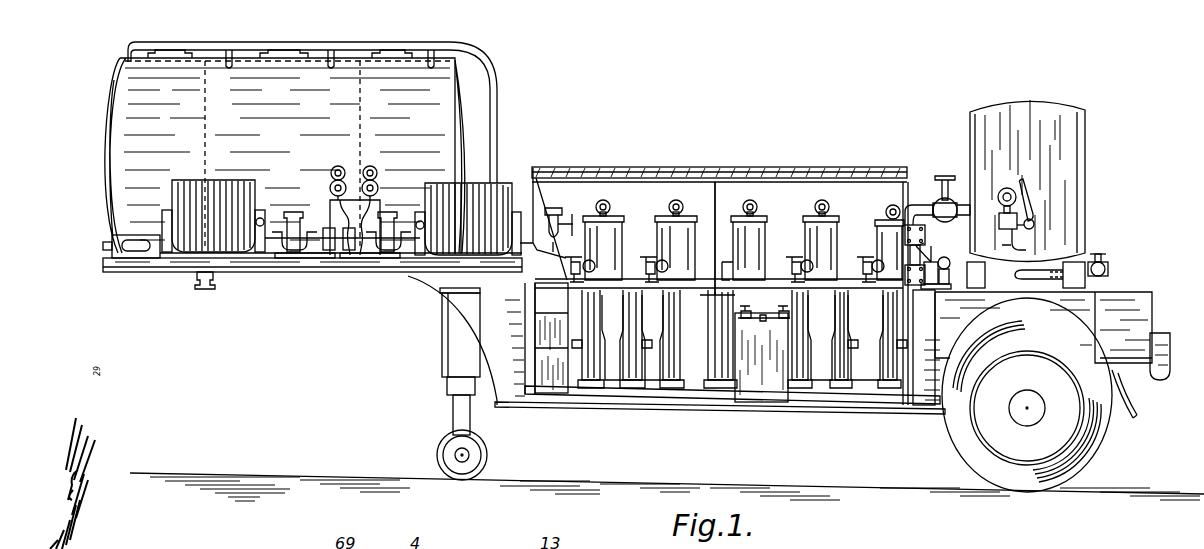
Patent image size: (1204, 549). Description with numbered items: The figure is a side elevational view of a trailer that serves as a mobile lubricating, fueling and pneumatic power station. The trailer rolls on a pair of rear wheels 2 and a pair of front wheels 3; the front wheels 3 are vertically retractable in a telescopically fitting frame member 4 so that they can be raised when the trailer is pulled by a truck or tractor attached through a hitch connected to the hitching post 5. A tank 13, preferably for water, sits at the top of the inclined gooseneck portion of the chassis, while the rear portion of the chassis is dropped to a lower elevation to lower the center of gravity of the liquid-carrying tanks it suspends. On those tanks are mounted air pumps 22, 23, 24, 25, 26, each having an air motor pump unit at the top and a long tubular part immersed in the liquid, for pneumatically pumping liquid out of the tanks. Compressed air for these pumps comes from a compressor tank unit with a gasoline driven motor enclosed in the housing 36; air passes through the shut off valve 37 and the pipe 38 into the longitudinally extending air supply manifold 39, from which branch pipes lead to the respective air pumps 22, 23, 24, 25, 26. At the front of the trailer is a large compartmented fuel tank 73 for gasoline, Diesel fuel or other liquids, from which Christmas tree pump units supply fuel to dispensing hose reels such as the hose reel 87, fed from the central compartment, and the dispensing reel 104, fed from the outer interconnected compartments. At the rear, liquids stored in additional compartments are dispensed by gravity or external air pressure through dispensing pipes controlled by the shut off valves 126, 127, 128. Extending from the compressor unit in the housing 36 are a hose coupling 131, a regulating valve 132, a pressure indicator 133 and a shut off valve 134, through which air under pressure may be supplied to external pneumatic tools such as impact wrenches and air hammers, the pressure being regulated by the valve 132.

The rear wheels 2 is at (1105, 437).
The front wheels 3 is at (488, 455).
The telescopically fitting frame member 4 is at (445, 355).
The hitching post 5 is at (206, 291).
The tank 13 is at (495, 404).
The air pump 22 is at (606, 218).
The air pump 23 is at (677, 218).
The air pump 24 is at (747, 218).
The air pump 25 is at (823, 218).
The air pump 26 is at (890, 210).
The housing 36 is at (1085, 138).
The shut off valve 37 is at (937, 258).
The pipe 38 is at (930, 203).
The air supply manifold 39 is at (775, 287).
The fuel tank 73 is at (463, 107).
The hose reel 87 is at (190, 247).
The dispensing reel 104 is at (448, 255).
The shut off valve 126 is at (755, 303).
The shut off valve 127 is at (763, 320).
The shut off valve 128 is at (781, 305).
The hose coupling 131 is at (1000, 245).
The regulating valve 132 is at (994, 208).
The pressure indicator 133 is at (1003, 191).
The shut off valve 134 is at (1030, 196).